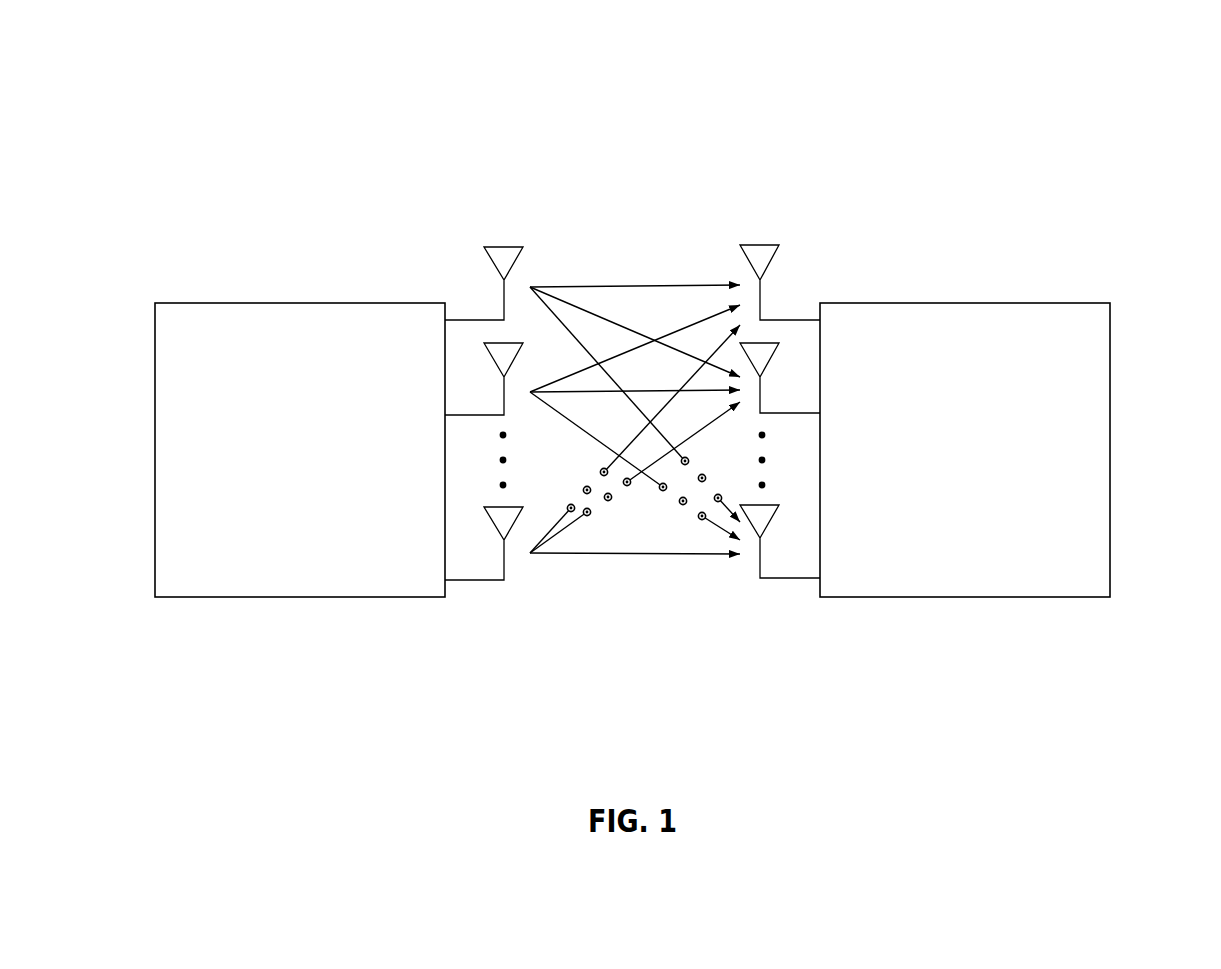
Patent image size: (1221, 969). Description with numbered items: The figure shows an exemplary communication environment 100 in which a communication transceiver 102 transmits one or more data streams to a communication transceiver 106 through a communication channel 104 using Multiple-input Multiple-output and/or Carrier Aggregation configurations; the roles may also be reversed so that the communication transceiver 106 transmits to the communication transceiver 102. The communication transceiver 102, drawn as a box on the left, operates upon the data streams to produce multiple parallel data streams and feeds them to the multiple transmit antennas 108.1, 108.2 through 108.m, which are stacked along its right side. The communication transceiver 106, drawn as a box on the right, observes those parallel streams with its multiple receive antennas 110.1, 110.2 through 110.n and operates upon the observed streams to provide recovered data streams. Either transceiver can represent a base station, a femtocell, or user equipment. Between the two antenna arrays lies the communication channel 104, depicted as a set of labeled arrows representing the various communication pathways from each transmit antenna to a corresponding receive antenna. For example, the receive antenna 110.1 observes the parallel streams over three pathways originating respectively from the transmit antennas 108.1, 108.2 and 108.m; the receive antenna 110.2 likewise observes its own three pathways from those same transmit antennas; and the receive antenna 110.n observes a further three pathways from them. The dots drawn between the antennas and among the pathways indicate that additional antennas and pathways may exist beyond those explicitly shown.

The communication environment 100 is at (1185, 108).
The communication transceiver 102 is at (293, 304).
The communication channel 104 is at (650, 181).
The communication transceiver 106 is at (970, 302).
The transmit antenna 108.1 is at (505, 236).
The transmit antenna 108.2 is at (480, 336).
The transmit antenna 108.m is at (503, 601).
The receive antenna 110.1 is at (765, 236).
The receive antenna 110.2 is at (787, 335).
The receive antenna 110.n is at (765, 599).